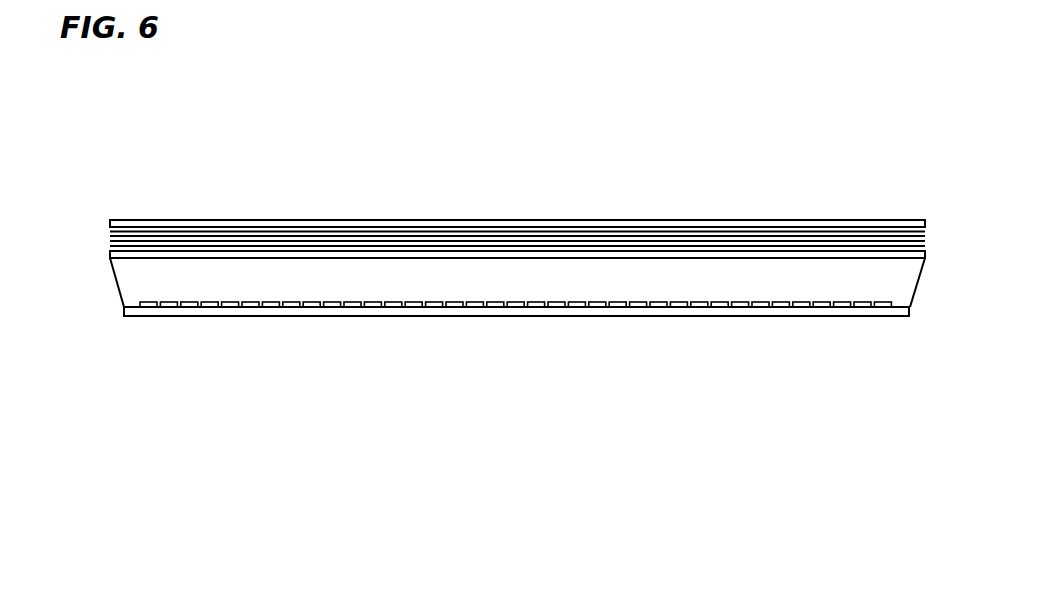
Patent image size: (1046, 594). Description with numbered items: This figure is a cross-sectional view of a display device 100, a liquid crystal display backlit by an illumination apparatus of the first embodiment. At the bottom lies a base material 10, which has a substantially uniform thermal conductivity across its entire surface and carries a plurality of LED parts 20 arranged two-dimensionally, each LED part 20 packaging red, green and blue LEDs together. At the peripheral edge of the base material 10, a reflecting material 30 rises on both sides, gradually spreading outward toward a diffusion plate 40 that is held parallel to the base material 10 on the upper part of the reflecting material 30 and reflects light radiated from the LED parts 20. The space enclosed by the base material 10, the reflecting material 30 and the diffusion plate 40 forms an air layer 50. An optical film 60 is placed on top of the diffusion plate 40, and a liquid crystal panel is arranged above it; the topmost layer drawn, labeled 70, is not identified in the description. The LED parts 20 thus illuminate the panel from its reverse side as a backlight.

The display device 100 is at (237, 420).
The base material 10 is at (655, 312).
The LED part 20 is at (208, 310).
The reflecting material 30 is at (118, 290).
The diffusion plate 40 is at (620, 257).
The air layer 50 is at (383, 282).
The optical film 60 is at (381, 232).
The top plate / liquid crystal panel 70 is at (176, 227).